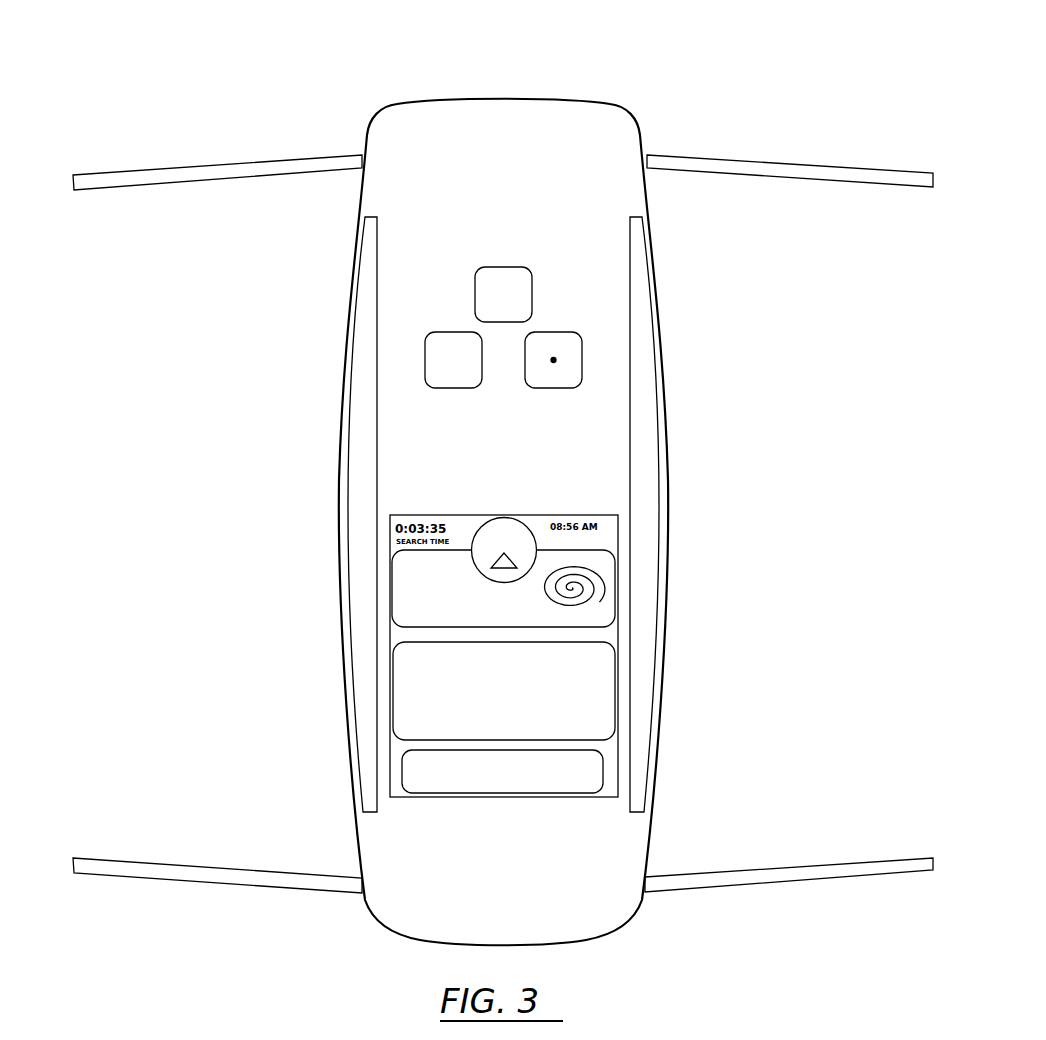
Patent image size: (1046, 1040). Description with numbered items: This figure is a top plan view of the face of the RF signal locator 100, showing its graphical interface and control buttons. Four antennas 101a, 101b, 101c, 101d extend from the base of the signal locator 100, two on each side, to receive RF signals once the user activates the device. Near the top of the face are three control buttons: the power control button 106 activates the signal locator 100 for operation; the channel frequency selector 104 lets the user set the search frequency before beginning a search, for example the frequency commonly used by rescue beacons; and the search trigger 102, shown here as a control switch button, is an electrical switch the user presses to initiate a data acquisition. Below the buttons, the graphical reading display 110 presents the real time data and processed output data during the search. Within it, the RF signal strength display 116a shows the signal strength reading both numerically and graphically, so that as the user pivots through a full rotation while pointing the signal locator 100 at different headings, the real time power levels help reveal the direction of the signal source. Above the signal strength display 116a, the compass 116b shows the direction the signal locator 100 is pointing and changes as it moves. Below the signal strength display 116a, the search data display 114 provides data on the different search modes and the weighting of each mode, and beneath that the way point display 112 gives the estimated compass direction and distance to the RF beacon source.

The RF signal locator 100 is at (700, 300).
The antenna 101a is at (117, 173).
The antenna 101b is at (905, 173).
The antenna 101c is at (97, 858).
The antenna 101d is at (912, 858).
The search trigger 102 is at (500, 267).
The channel frequency selector 104 is at (450, 332).
The power control button 106 is at (560, 332).
The graphical reading display 110 is at (664, 518).
The way point display 112 is at (402, 774).
The search data display 114 is at (618, 690).
The RF signal strength display 116a is at (392, 587).
The compass 116b is at (524, 518).